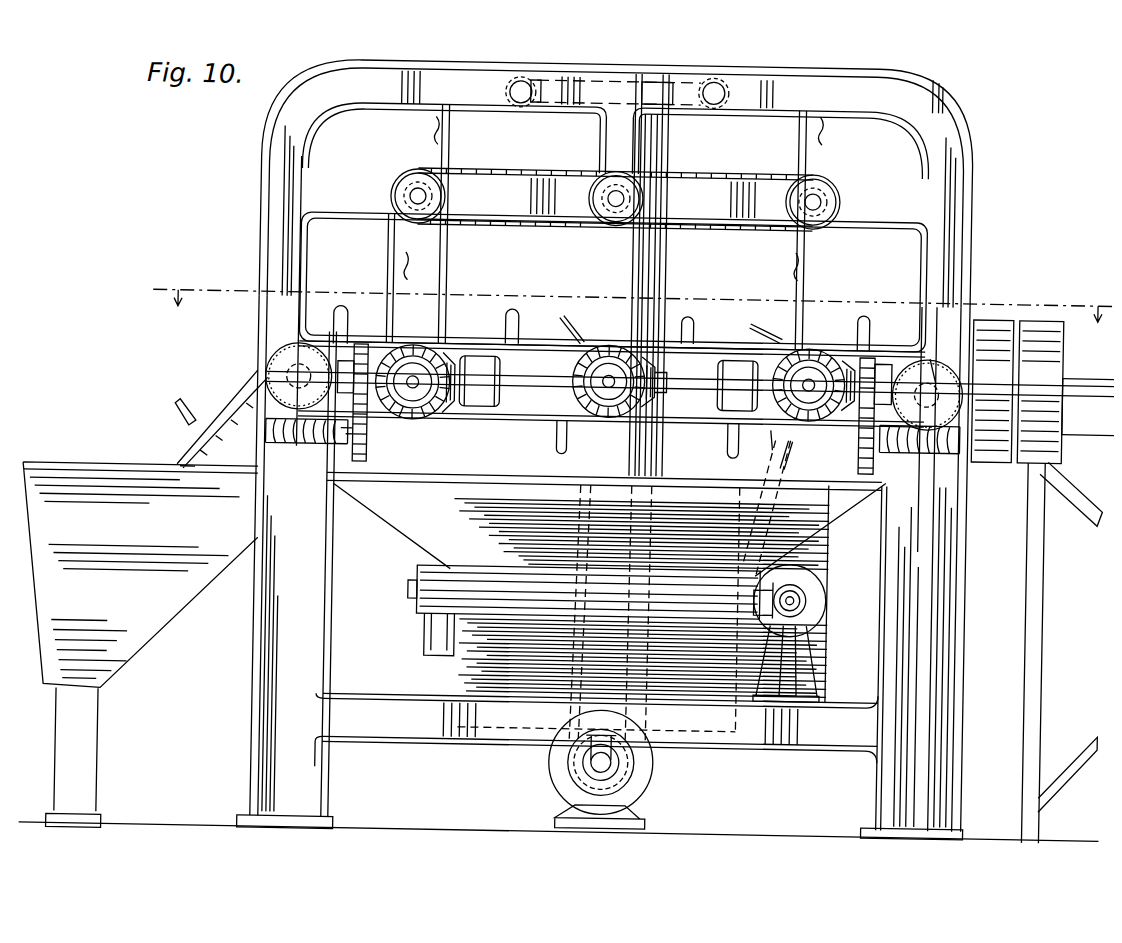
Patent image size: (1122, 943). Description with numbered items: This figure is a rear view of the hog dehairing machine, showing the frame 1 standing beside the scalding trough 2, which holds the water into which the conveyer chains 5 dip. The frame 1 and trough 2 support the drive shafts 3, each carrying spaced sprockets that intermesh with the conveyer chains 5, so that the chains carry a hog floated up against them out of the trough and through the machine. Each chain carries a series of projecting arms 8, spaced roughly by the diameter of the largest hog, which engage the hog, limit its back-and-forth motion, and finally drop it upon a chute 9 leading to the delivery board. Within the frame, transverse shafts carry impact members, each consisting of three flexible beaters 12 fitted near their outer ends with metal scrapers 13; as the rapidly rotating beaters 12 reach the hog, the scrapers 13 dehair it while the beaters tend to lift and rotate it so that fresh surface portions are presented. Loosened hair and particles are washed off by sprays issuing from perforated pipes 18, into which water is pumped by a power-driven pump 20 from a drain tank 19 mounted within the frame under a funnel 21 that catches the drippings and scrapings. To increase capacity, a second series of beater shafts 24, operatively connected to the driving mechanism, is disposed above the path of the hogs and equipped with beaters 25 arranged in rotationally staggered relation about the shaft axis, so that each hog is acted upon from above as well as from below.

The frame 1 is at (255, 238).
The scalding trough 2 is at (30, 580).
The drive shafts 3 is at (275, 364).
The conveyer chains 5 is at (180, 453).
The projecting arms 8 is at (336, 309).
The chute 9 is at (1078, 478).
The flexible beaters 12 is at (374, 334).
The metal scrapers 13 is at (577, 324).
The perforated pipes 18 is at (524, 80).
The drain tank 19 is at (499, 671).
The power-driven pump 20 is at (654, 776).
The funnel 21 is at (478, 496).
The second series of beater shafts 24 is at (421, 200).
The beaters 25 is at (438, 144).